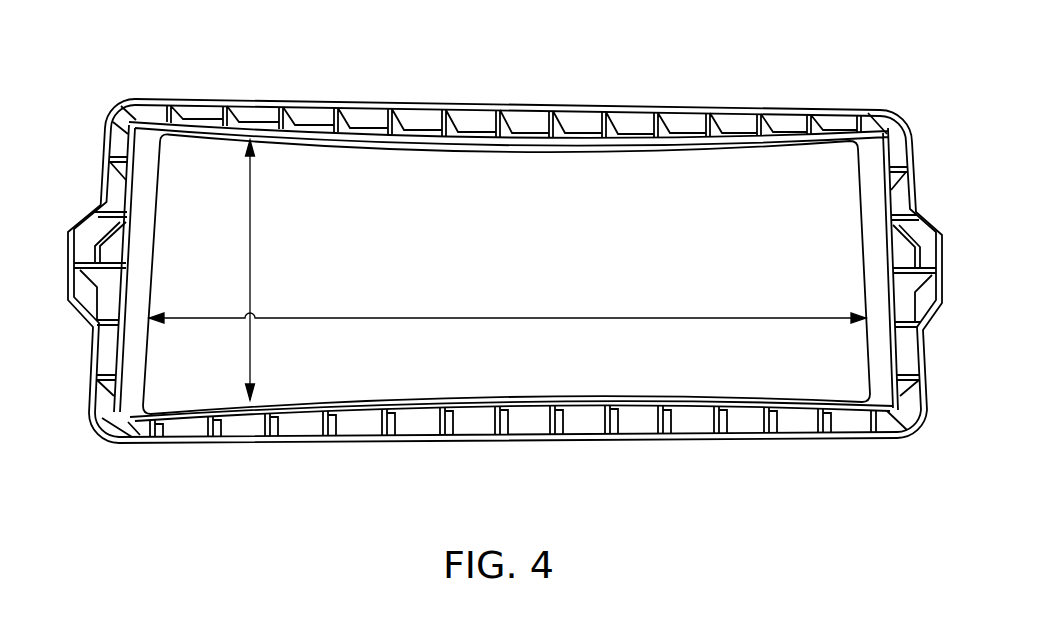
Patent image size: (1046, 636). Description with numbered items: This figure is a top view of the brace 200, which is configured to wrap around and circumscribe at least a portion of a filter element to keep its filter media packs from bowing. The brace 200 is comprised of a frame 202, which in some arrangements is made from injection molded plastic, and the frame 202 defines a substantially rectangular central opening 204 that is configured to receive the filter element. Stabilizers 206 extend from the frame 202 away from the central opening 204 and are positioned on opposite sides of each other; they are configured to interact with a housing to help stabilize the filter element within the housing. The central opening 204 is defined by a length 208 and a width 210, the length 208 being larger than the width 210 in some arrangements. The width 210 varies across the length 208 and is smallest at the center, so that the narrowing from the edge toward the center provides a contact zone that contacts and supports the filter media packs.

The brace 200 is at (503, 226).
The frame 202 is at (135, 118).
The central opening 204 is at (518, 226).
The stabilizers 206 is at (87, 213).
The length 208 is at (715, 315).
The width 210 is at (253, 225).